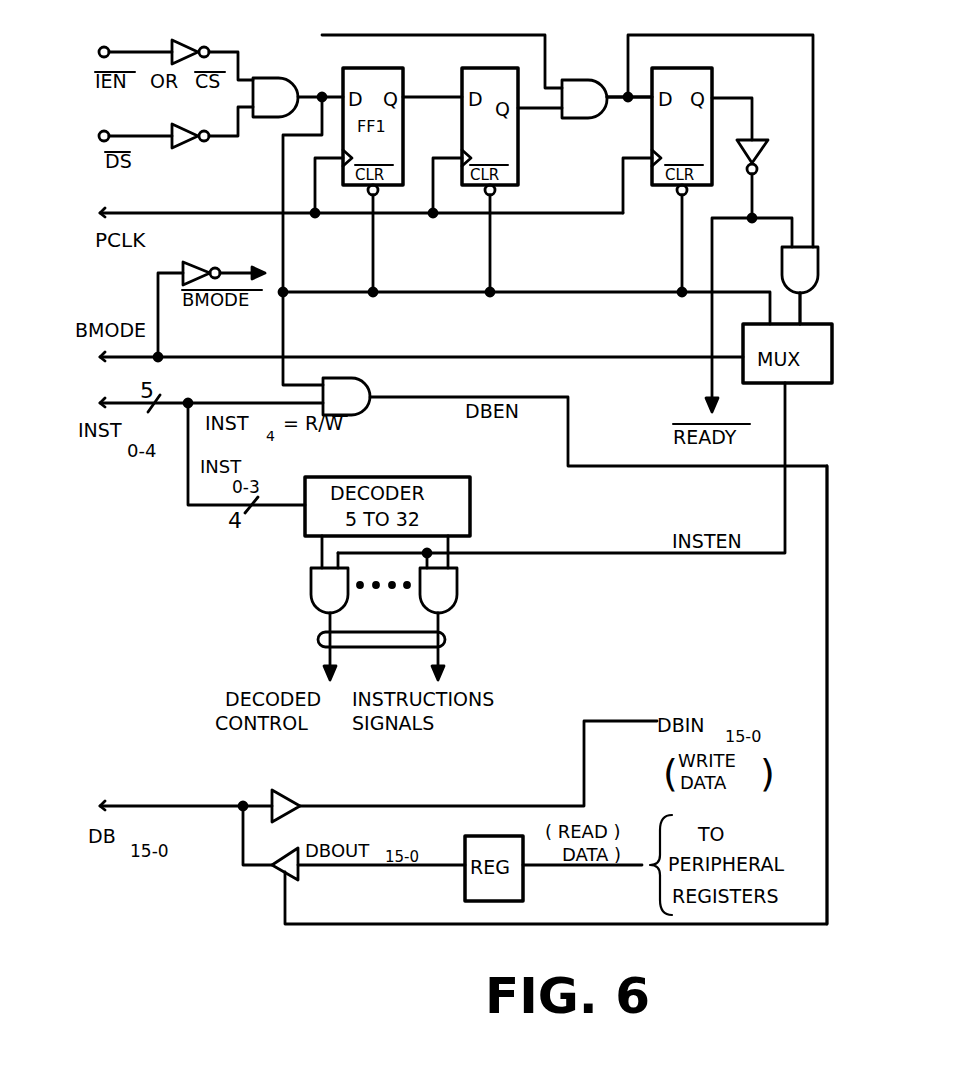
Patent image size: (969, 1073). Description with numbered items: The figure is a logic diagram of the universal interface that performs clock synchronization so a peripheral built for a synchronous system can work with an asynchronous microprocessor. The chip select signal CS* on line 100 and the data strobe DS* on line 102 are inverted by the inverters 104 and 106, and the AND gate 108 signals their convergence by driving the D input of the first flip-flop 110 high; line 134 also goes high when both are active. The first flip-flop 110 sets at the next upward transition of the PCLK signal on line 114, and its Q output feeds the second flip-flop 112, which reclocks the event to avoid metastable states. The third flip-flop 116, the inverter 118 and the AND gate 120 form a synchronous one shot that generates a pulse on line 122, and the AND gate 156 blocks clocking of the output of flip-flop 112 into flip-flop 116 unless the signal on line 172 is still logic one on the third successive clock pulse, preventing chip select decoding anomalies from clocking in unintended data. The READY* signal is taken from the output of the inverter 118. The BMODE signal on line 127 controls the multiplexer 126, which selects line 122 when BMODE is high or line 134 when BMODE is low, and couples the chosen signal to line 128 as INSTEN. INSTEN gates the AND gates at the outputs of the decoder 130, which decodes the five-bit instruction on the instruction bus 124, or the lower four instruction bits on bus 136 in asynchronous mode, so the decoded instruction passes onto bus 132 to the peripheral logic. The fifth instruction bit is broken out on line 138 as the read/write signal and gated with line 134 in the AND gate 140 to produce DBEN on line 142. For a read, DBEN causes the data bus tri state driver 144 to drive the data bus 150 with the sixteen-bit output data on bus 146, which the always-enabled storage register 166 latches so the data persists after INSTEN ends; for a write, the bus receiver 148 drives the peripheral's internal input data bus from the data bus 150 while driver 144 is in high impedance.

The CS* signal line 100 is at (142, 32).
The DS* signal line 102 is at (140, 136).
The inverter 104 is at (175, 42).
The inverter 106 is at (202, 144).
The AND gate 108 is at (300, 55).
The first flip-flop 110 is at (403, 68).
The second flip-flop 112 is at (480, 68).
The PCLK signal line 114 is at (185, 213).
The third flip-flop 116 is at (712, 72).
The inverter 118 is at (758, 156).
The AND gate 120 is at (782, 278).
The line 122 is at (626, 104).
The INSTO-4 bus 124 is at (122, 403).
The multiplexer 126 is at (760, 383).
The BMODE line 127 is at (205, 357).
The INSTEN line 128 is at (785, 445).
The decoder 130 is at (470, 490).
The decoded instruction bus 132 is at (445, 640).
The line 134 is at (322, 97).
The INSTO-3 bus 136 is at (190, 505).
The INST4 line 138 is at (205, 403).
The AND gate 140 is at (355, 378).
The DBEN line 142 is at (827, 625).
The data bus tri state driver 144 is at (284, 876).
The DBOUT15-0 bus 146 is at (318, 865).
The bus receiver 148 is at (290, 790).
The data bus 150 is at (178, 806).
The AND gate 156 is at (578, 118).
The storage register 166 is at (523, 885).
The line 172 is at (355, 35).